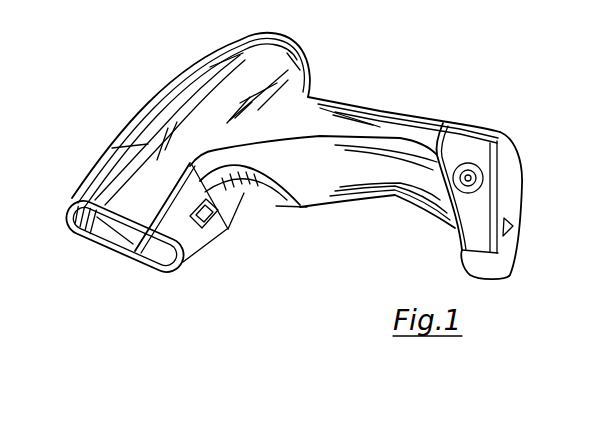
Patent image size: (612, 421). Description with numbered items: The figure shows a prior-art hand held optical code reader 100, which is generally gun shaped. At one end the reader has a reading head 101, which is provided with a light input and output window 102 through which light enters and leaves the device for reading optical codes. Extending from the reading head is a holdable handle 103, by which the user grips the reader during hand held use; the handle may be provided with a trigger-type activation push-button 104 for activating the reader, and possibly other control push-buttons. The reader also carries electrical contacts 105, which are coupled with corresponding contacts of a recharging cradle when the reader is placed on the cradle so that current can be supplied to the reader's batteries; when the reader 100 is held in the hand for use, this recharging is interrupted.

The hand held optical code reader 100 is at (442, 66).
The reading head 101 is at (184, 260).
The light input and output window 102 is at (87, 254).
The holdable handle 103 is at (389, 178).
The trigger-type activation push-button 104 is at (276, 206).
The electrical contacts 105 is at (208, 232).